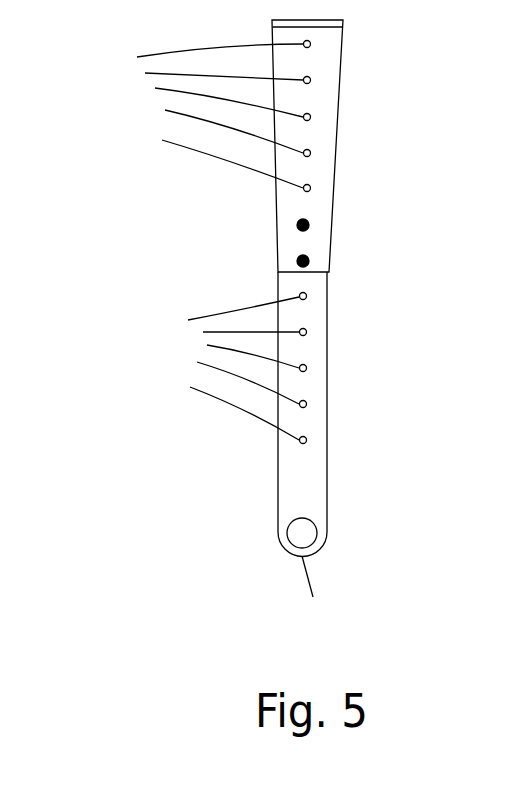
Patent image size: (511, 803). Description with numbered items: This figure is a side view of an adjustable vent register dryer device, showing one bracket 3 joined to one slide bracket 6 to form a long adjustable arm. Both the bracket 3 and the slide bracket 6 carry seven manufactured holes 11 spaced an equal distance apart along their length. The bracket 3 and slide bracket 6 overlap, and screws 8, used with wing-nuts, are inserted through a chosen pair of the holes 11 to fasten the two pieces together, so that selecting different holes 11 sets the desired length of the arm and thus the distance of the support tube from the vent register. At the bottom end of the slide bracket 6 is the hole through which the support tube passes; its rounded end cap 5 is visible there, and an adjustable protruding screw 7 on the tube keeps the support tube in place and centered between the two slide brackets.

The bracket 3 is at (372, 147).
The slide bracket 6 is at (370, 435).
The manufactured holes 11 is at (193, 242).
The screws 8 is at (310, 226).
The rounded end cap 5 is at (314, 533).
The adjustable protruding screws 7 is at (316, 595).